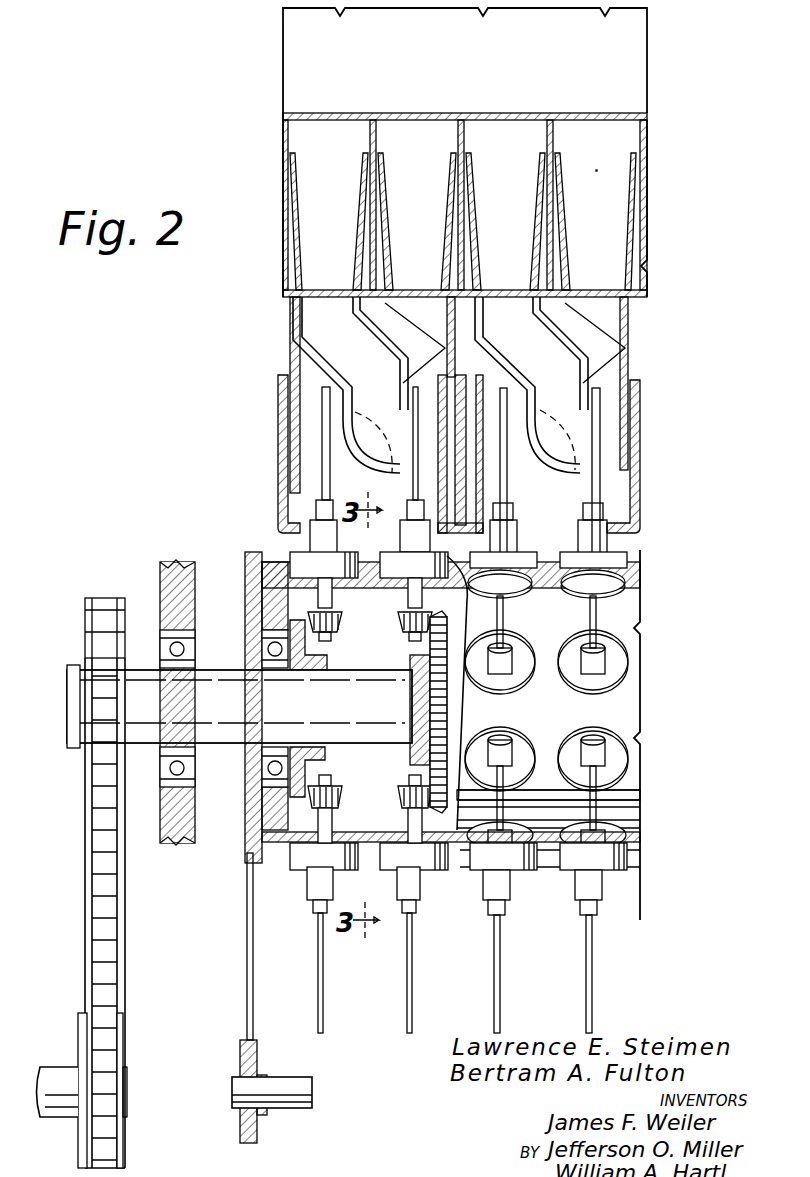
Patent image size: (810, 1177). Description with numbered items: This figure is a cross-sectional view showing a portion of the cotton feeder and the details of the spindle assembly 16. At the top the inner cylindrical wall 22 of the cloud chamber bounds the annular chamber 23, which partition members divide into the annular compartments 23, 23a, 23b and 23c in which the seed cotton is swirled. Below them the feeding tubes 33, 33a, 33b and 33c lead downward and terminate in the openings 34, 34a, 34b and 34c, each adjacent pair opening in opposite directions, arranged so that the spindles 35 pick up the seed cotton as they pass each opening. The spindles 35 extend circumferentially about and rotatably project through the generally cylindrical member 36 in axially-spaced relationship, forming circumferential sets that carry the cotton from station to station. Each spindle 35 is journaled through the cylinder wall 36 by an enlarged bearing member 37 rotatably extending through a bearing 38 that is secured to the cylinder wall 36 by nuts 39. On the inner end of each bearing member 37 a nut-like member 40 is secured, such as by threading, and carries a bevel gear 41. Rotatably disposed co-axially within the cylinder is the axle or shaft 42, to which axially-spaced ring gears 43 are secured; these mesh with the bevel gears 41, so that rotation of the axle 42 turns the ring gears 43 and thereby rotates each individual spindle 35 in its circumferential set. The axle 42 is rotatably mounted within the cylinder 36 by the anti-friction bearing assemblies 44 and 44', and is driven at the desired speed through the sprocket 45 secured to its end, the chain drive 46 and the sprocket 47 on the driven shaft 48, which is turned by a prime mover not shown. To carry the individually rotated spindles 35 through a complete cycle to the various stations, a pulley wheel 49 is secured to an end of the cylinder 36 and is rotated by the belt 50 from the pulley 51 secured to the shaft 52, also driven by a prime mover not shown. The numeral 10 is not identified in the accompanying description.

The support plate 10 is at (150, 848).
The spindle assembly 16 is at (631, 703).
The inner cylindrical wall 22 is at (509, 114).
The annular chamber 23 is at (606, 195).
The annular compartment 23a is at (519, 195).
The annular compartment 23b is at (432, 195).
The annular compartment 23c is at (345, 197).
The feeding tube 33 is at (606, 334).
The feeding tube 33a is at (520, 341).
The feeding tube 33b is at (425, 334).
The feeding tube 33c is at (343, 341).
The opening 34 is at (580, 446).
The opening 34a is at (520, 467).
The opening 34b is at (335, 460).
The opening 34c is at (390, 446).
The spindle 35 is at (595, 625).
The cylindrical member 36 is at (630, 803).
The bearing member 37 is at (398, 832).
The bearing 38 is at (307, 892).
The nut 39 is at (386, 868).
The nut-like member 40 is at (400, 802).
The bevel gear 41 is at (344, 620).
The axle or shaft 42 is at (290, 708).
The ring gear 43 is at (330, 660).
The anti-friction bearing assembly 44 is at (206, 715).
The anti-friction bearing assembly 44' is at (247, 682).
The sprocket 45 is at (125, 618).
The chain drive 46 is at (86, 885).
The sprocket 47 is at (124, 1040).
The driven shaft 48 is at (59, 1080).
The pulley wheel 49 is at (230, 856).
The belt 50 is at (246, 946).
The pulley 51 is at (238, 1058).
The shaft 52 is at (290, 1077).